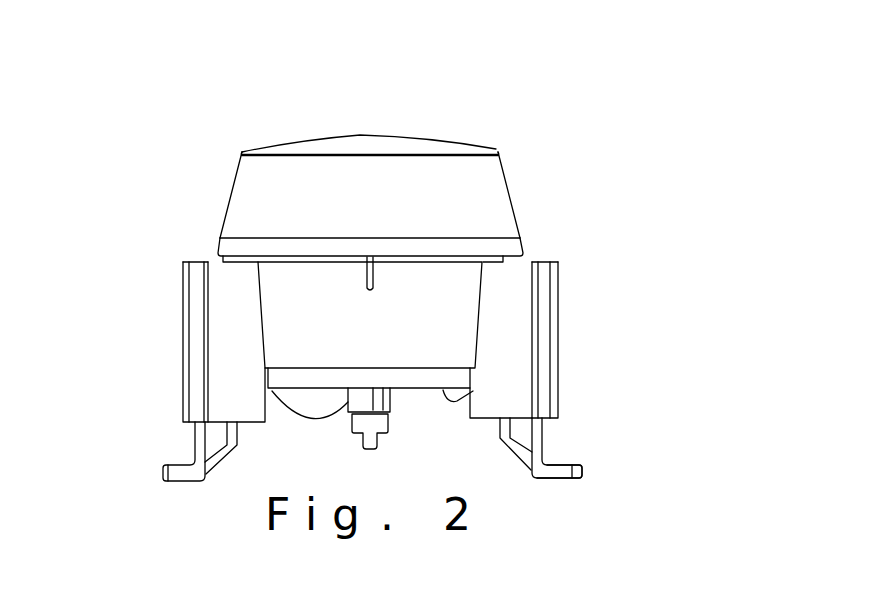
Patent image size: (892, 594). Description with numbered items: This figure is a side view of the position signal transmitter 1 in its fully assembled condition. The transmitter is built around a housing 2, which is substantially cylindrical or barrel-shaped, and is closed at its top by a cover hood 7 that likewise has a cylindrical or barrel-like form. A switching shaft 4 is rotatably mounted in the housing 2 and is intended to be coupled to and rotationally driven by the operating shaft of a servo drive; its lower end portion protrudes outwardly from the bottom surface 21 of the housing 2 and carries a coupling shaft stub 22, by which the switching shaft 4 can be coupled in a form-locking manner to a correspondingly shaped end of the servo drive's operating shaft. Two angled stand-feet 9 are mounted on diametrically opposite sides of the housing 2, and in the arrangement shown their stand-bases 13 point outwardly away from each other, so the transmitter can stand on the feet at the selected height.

The position signal transmitter 1 is at (390, 135).
The cover hood 7 is at (510, 172).
The housing 2 is at (440, 293).
The bottom surface 21 is at (478, 392).
The switching shaft 4 is at (358, 398).
The coupling shaft stub 22 is at (357, 433).
The stand-foot 9 is at (545, 433).
The stand-base 13 is at (583, 463).